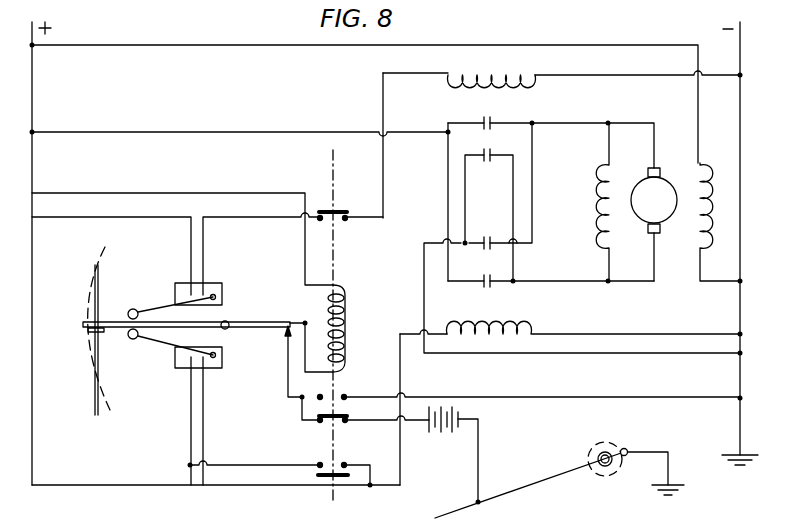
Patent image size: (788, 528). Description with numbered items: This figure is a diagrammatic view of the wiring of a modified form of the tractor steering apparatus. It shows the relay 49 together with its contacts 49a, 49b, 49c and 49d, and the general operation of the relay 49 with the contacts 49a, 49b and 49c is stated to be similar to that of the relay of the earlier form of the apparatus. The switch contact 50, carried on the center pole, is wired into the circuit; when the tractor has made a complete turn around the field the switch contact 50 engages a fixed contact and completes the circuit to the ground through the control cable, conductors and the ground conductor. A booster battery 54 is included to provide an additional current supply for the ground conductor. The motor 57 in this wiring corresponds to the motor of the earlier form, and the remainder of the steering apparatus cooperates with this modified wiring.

The relay 49 is at (345, 322).
The contact 49a is at (340, 209).
The contact 49b is at (346, 395).
The contact 49c is at (337, 419).
The relay contact 49d is at (340, 468).
The switch contact 50 is at (290, 321).
The booster battery 54 is at (433, 433).
The motor 57 is at (665, 188).